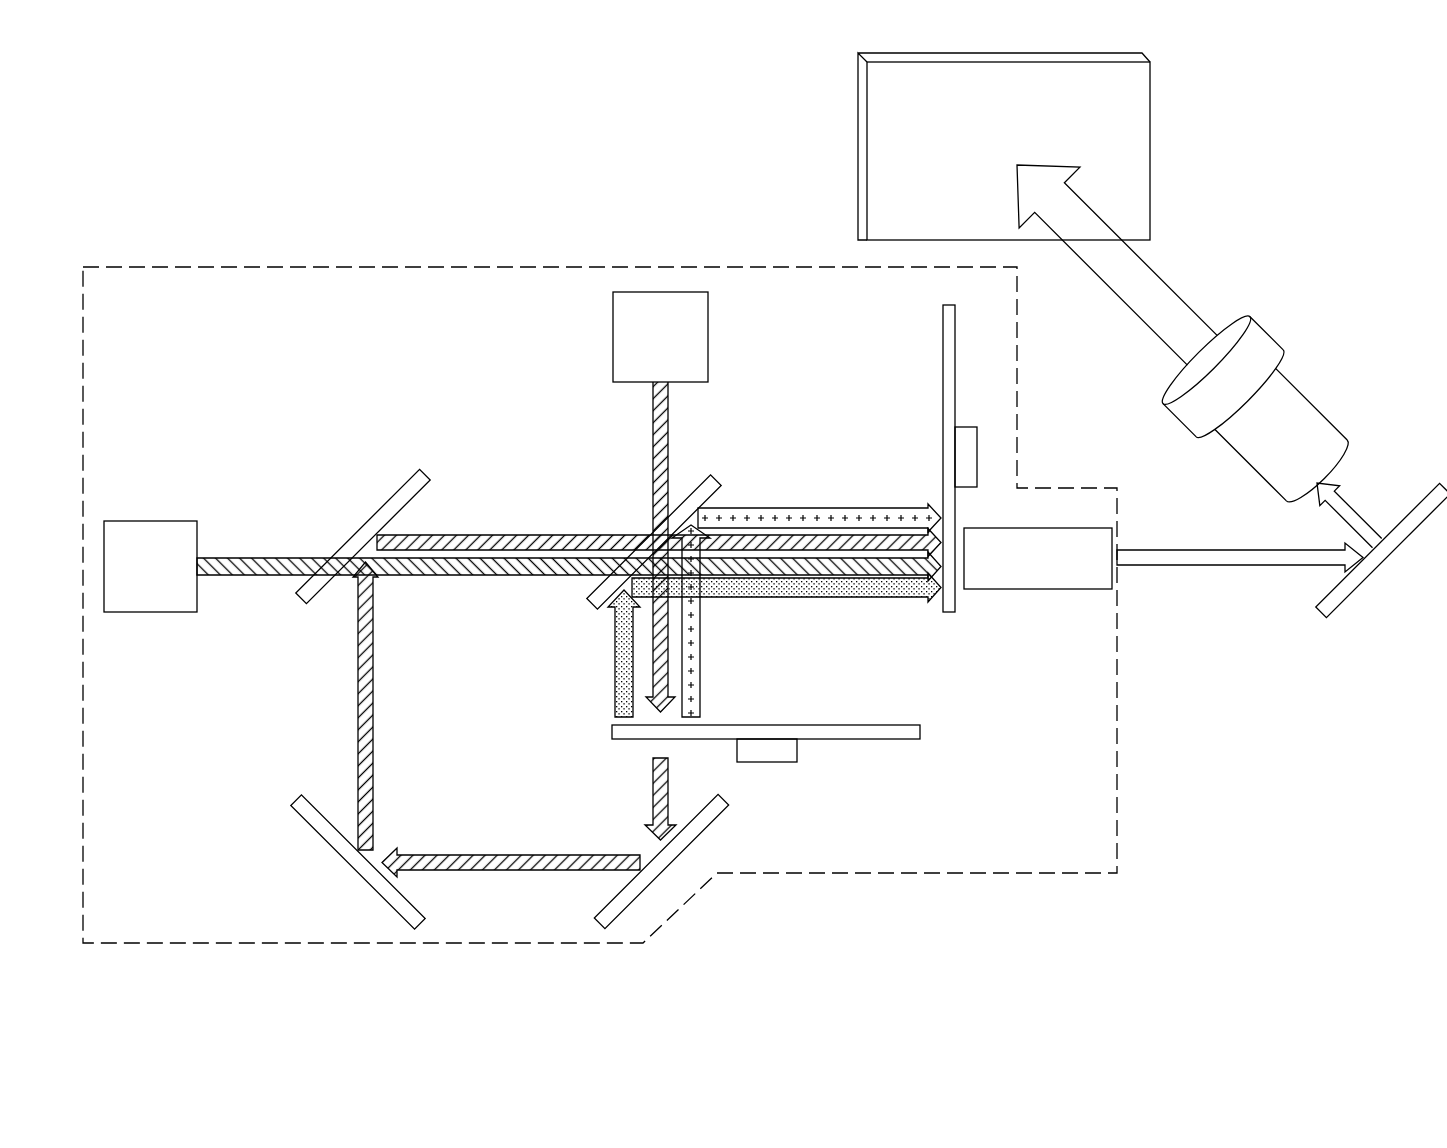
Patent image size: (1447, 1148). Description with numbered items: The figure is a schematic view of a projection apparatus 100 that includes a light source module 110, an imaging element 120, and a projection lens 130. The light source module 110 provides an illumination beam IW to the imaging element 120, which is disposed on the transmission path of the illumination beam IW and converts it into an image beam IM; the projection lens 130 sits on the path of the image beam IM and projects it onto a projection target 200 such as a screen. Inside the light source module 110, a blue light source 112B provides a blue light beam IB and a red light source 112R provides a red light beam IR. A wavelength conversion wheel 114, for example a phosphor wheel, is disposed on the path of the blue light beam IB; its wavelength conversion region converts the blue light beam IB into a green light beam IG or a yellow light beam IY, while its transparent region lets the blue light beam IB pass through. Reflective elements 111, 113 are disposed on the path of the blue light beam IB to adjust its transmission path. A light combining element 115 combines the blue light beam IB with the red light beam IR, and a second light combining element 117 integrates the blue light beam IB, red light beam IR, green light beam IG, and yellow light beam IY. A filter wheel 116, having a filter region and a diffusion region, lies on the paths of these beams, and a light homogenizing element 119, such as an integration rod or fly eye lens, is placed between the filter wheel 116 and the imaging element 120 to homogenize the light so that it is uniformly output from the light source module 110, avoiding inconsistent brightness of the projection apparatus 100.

The projection apparatus 100 is at (1327, 851).
The light source module 110 is at (200, 266).
The reflective element 111 is at (707, 822).
The red light source 112R is at (150, 521).
The blue light source 112B is at (658, 292).
The reflective element 113 is at (350, 852).
The wavelength conversion wheel 114 is at (875, 740).
The light combining element 115 is at (392, 493).
The filter wheel 116 is at (943, 348).
The light combining element 117 is at (697, 484).
The light homogenizing element 119 is at (1028, 590).
The imaging element 120 is at (1385, 580).
The projection lens 130 is at (1308, 393).
The projection target 200 is at (1150, 152).
The red light beam IR is at (255, 558).
The blue light beam IB is at (653, 434).
The green light beam IG is at (615, 665).
The yellow light beam IY is at (700, 665).
The image beam IM is at (1367, 512).
The illumination beam IW is at (1222, 566).